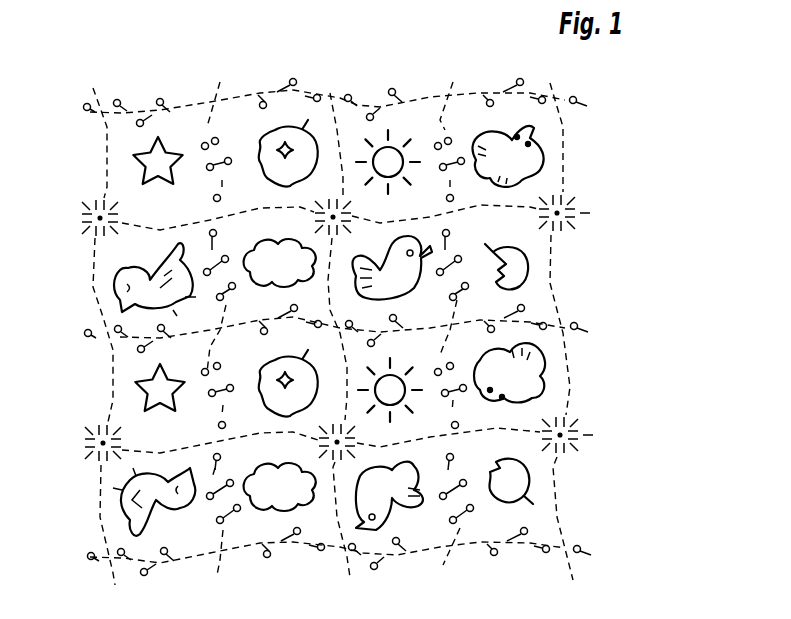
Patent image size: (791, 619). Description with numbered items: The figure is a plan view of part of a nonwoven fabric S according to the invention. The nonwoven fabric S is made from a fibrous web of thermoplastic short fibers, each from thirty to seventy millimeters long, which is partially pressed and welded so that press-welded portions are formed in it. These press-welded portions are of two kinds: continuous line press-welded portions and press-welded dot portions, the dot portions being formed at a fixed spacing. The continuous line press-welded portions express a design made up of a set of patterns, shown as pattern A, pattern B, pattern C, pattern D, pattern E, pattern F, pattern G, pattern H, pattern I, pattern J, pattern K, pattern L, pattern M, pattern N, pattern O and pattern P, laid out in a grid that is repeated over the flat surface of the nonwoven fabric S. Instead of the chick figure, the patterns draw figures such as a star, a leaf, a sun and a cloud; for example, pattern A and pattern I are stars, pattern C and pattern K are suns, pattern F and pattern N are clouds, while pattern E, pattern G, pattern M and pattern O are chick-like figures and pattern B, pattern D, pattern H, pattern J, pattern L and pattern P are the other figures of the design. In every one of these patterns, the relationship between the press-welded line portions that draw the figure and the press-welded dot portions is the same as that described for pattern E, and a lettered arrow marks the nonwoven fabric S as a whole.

The pattern A is at (148, 165).
The pattern B is at (287, 150).
The pattern C is at (387, 153).
The pattern D is at (503, 147).
The pattern E is at (122, 272).
The pattern F is at (282, 260).
The pattern G is at (390, 278).
The pattern H is at (510, 265).
The pattern I is at (148, 387).
The pattern J is at (277, 373).
The pattern K is at (393, 382).
The pattern L is at (535, 370).
The pattern M is at (135, 532).
The pattern N is at (268, 490).
The pattern O is at (377, 520).
The pattern P is at (497, 490).
The nonwoven fabric S is at (568, 508).